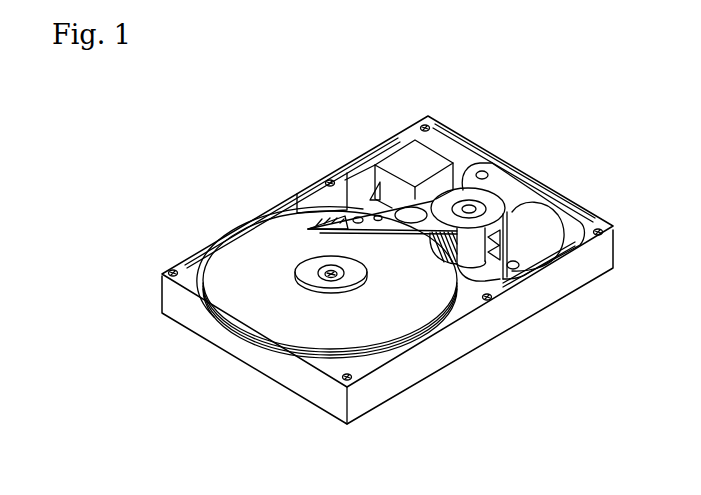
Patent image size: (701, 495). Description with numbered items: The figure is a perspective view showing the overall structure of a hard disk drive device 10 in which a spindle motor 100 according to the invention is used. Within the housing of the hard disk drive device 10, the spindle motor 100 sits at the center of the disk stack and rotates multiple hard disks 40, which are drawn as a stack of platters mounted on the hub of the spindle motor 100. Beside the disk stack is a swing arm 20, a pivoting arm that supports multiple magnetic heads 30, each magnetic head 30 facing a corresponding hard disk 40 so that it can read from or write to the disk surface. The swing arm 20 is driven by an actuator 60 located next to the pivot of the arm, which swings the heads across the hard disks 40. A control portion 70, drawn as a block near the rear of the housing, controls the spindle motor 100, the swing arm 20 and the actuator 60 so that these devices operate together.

The hard disk drive device 10 is at (219, 179).
The swing arm 20 is at (390, 222).
The magnetic head 30 is at (327, 222).
The hard disk 40 is at (253, 311).
The actuator 60 is at (525, 210).
The control portion 70 is at (428, 162).
The spindle motor 100 is at (310, 279).